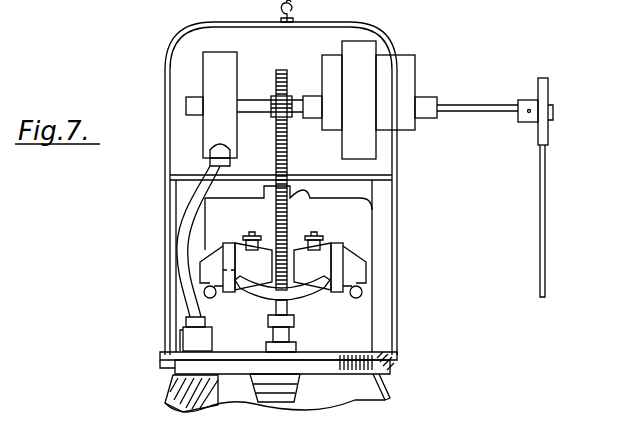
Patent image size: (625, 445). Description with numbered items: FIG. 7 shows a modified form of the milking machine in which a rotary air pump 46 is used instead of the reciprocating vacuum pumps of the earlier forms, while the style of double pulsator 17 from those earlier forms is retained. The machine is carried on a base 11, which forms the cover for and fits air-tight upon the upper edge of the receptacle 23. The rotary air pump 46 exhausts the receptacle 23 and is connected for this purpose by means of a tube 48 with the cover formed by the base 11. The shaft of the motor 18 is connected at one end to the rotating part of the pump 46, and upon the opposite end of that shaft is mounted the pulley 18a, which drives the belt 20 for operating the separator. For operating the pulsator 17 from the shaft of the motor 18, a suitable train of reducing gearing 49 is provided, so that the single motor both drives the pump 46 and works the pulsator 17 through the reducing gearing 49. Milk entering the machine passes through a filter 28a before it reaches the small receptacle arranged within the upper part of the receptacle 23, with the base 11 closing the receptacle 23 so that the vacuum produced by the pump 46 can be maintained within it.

The rotary air pump 46 is at (230, 68).
The motor 18 is at (407, 96).
The pulley 18a is at (548, 88).
The belt 20 is at (546, 188).
The train of reducing gearing 49 is at (283, 190).
The tube 48 is at (185, 230).
The double pulsator 17 is at (337, 274).
The base 11 is at (330, 353).
The receptacle 23 is at (387, 399).
The filter 28a is at (278, 392).